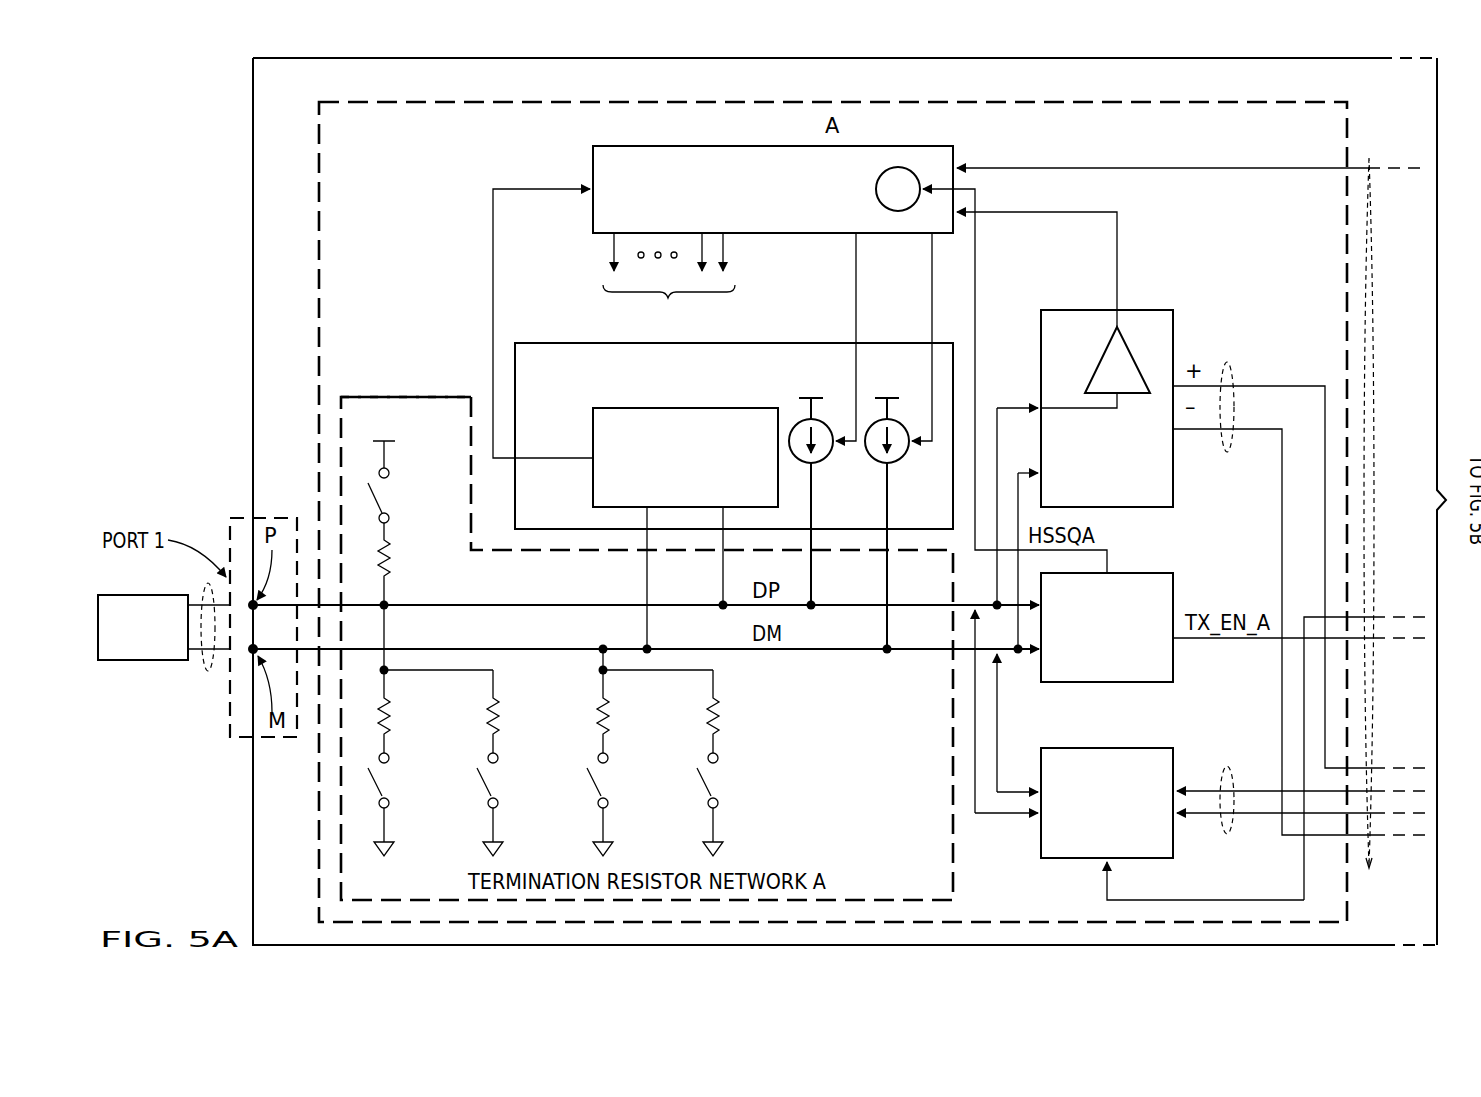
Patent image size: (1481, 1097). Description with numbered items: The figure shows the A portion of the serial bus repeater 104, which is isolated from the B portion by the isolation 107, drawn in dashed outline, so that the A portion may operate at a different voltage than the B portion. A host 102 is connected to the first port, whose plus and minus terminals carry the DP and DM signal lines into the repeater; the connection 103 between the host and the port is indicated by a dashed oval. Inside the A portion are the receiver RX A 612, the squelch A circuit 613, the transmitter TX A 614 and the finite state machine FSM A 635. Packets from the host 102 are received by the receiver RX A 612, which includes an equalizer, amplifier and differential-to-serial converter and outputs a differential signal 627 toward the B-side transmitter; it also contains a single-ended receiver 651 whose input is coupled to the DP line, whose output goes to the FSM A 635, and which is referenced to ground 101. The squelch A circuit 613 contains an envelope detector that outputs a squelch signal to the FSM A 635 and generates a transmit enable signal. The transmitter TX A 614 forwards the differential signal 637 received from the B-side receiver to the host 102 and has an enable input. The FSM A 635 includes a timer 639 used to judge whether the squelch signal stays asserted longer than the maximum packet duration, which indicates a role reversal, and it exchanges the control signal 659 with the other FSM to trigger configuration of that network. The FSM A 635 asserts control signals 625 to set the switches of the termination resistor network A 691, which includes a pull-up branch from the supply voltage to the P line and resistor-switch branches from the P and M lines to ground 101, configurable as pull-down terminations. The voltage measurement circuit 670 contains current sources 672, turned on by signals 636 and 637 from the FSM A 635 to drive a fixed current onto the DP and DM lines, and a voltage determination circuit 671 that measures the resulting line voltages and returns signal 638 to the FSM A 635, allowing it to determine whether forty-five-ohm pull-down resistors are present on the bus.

The serial bus repeater 104 is at (250, 147).
The host 102 is at (147, 662).
The host connection 103 is at (208, 672).
The isolation 107 is at (1370, 158).
The FSM A 635 is at (590, 180).
The timer 639 is at (876, 200).
The control signals 625 is at (669, 282).
The signal 638 is at (490, 322).
The signal 636 is at (854, 300).
The signal / differential signal 637 is at (930, 300).
The control signal 659 is at (1226, 166).
The voltage measurement circuit 670 is at (562, 340).
The voltage determination circuit 671 is at (590, 470).
The current sources 672 is at (826, 458).
The receiver RX A 612 is at (1073, 308).
The single-ended receiver 651 is at (1100, 360).
The differential signal 627 is at (1227, 452).
The squelch A circuit 613 is at (1073, 684).
The transmitter TX A 614 is at (1073, 860).
The termination resistor network A 691 is at (387, 394).
The ground 101 is at (396, 853).